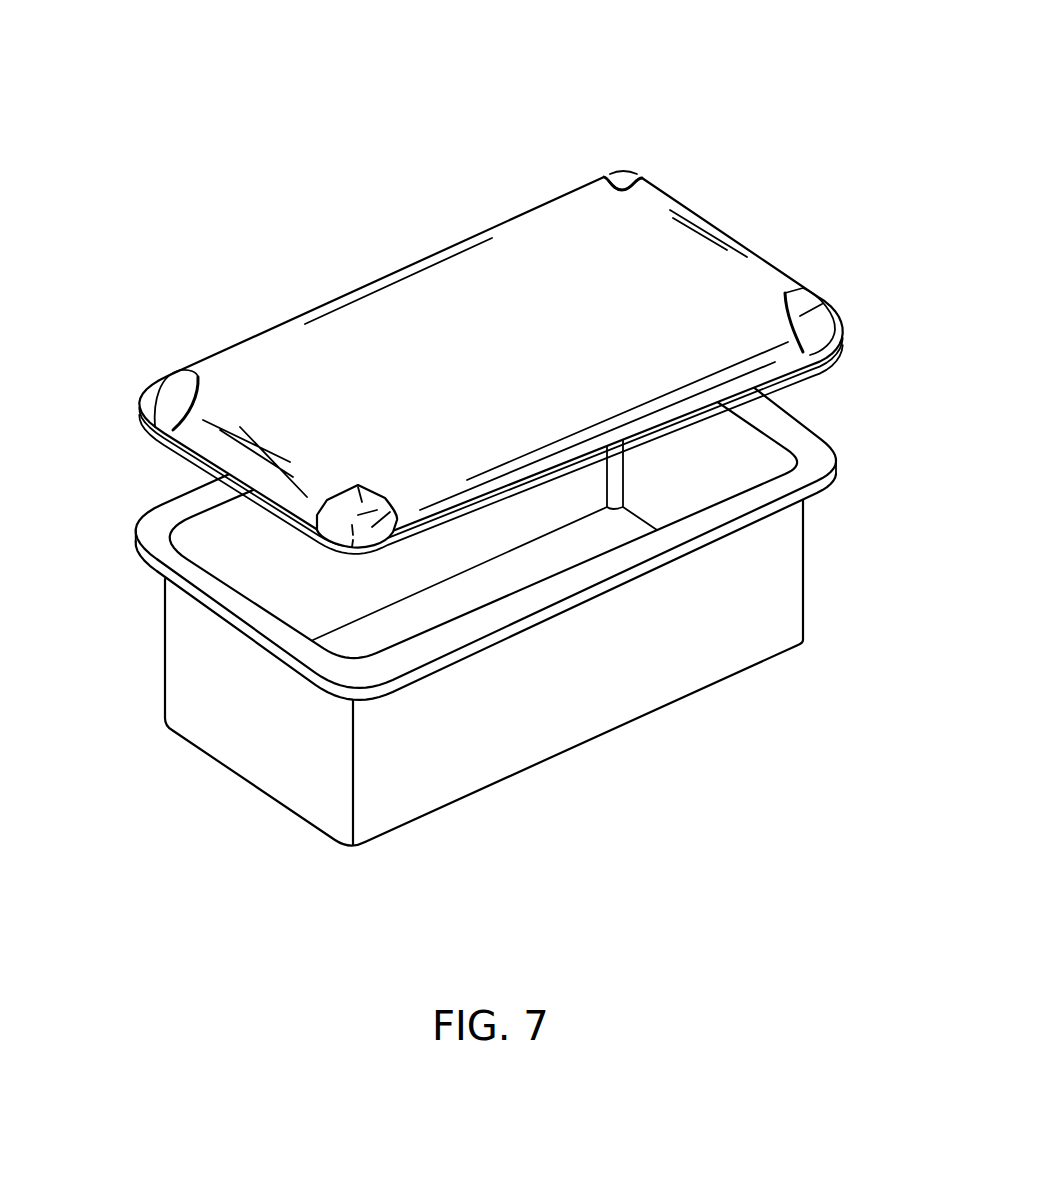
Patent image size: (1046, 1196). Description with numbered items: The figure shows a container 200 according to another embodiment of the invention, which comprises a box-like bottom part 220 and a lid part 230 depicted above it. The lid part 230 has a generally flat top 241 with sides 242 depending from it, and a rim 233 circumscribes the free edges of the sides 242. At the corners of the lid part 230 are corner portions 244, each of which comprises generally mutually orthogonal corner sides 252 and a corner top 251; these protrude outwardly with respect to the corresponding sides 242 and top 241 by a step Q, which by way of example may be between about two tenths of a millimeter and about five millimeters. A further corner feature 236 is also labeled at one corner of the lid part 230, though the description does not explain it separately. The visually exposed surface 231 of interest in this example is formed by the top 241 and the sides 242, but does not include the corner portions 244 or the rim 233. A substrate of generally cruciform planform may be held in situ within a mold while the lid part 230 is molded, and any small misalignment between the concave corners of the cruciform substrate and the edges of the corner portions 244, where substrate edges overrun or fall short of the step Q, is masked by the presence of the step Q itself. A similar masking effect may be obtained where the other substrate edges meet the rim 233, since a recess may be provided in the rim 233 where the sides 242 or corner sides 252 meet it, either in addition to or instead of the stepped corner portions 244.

The container 200 is at (465, 433).
The bottom part 220 is at (640, 668).
The lid part 230 is at (330, 333).
The visually exposed surface 231 is at (456, 283).
The rim 233 is at (145, 426).
The corner tab 236 is at (173, 385).
The top 241 is at (530, 238).
The sides 242 is at (240, 447).
The corner portions 244 is at (636, 161).
The corner top 251 is at (362, 502).
The corner sides 252 is at (375, 527).
The step Q is at (609, 173).